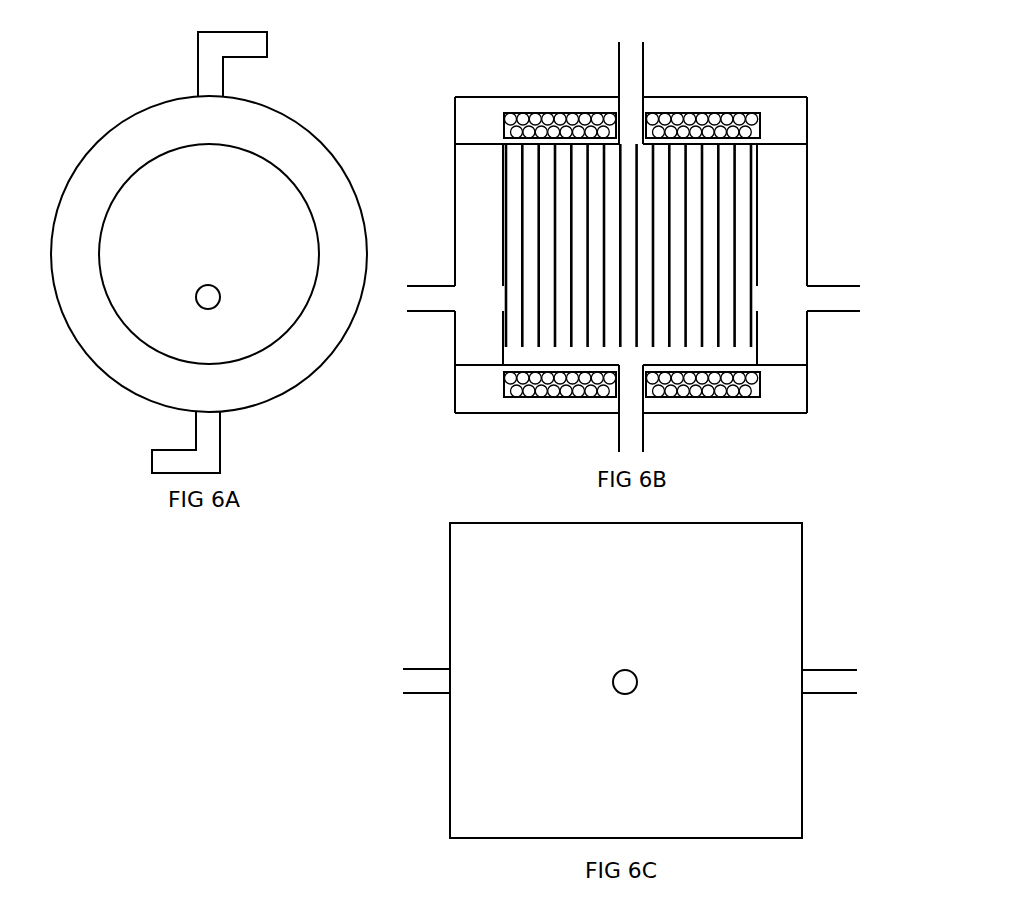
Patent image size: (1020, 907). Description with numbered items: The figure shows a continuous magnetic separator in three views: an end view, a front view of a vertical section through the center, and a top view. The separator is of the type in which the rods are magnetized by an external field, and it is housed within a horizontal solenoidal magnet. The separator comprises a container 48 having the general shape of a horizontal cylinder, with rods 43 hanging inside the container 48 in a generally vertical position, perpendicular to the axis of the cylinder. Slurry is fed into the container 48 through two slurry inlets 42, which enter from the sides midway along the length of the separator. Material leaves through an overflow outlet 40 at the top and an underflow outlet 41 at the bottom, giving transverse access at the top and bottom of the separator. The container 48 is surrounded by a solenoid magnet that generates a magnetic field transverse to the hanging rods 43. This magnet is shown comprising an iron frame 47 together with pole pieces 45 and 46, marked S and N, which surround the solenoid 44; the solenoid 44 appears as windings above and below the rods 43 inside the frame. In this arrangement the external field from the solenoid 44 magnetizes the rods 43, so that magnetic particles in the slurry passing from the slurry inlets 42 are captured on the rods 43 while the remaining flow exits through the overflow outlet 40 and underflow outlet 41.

In FIG. 6A, the overflow outlet 40 is at (283, 39).
In FIG. 6B, the overflow outlet 40 is at (633, 40).
In FIG. 6A, the underflow outlet 41 is at (175, 443).
In FIG. 6B, the underflow outlet 41 is at (612, 437).
In FIG. 6C, the underflow outlet 41 is at (636, 689).
In FIG. 6A, the slurry inlets 42 is at (219, 305).
In FIG. 6B, the slurry inlets 42 is at (405, 303).
In FIG. 6C, the slurry inlets 42 is at (858, 680).
In FIG. 6B, the rods 43 is at (733, 320).
In FIG. 6B, the solenoid 44 is at (567, 117).
In FIG. 6A, the pole piece 45 is at (282, 205).
In FIG. 6B, the pole piece 45 is at (470, 208).
In FIG. 6B, the pole piece 46 is at (792, 208).
In FIG. 6A, the iron frame 47 is at (298, 118).
In FIG. 6B, the iron frame 47 is at (792, 128).
In FIG. 6B, the container 48 is at (743, 143).